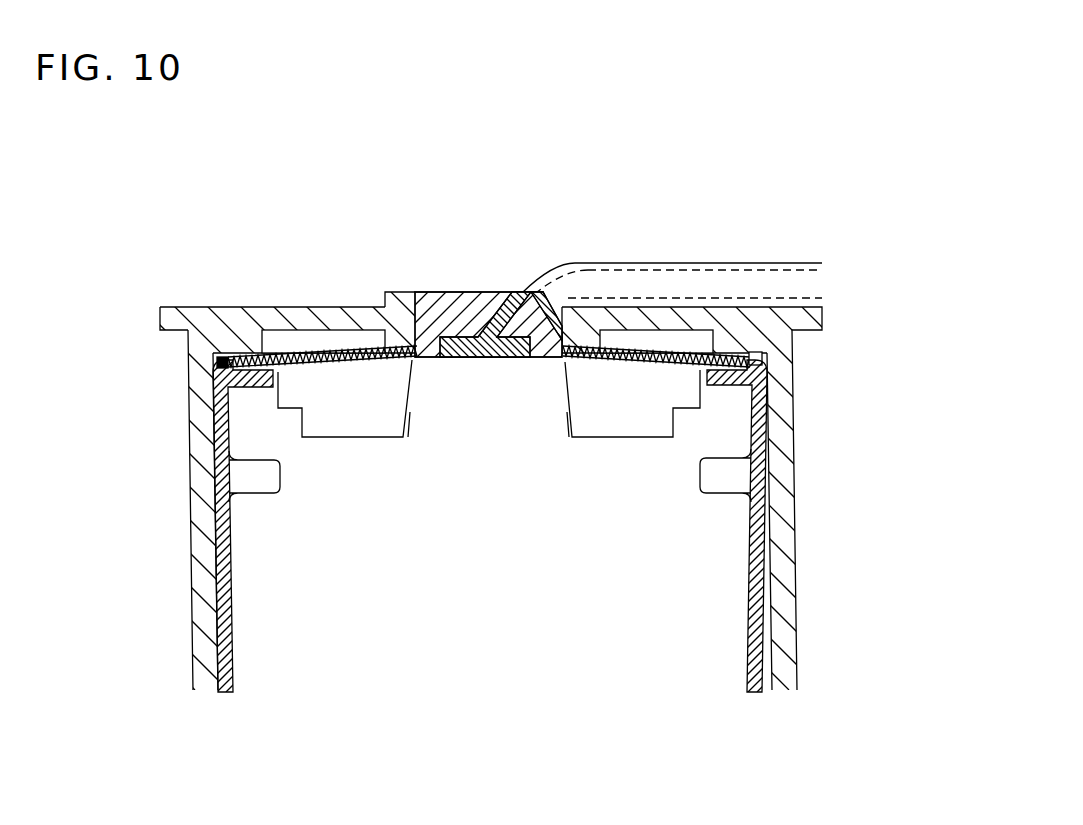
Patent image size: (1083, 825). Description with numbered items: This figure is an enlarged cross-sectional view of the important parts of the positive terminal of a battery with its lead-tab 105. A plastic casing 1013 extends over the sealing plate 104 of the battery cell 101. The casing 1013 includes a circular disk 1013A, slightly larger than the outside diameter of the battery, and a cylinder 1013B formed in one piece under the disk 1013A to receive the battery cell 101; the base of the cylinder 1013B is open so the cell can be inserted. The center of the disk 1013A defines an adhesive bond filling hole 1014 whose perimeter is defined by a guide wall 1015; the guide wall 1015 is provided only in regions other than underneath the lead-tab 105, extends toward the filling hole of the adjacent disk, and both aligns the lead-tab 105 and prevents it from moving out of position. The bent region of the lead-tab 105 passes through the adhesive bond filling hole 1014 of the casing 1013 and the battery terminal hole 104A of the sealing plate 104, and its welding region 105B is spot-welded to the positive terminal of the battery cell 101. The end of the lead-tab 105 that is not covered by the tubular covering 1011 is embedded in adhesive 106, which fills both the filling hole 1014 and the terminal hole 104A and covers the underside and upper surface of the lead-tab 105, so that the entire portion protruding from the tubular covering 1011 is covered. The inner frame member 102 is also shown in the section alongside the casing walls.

The battery cell 101 is at (477, 665).
The inner frame member 102 is at (227, 574).
The sealing plate 104 is at (307, 373).
The battery terminal hole 104A is at (432, 362).
The lead-tab 105 is at (732, 286).
The welding region 105B is at (488, 327).
The adhesive 106 is at (433, 292).
The tubular covering 1011 is at (632, 262).
The casing 1013 is at (217, 316).
The disk 1013A is at (310, 313).
The cylinder 1013B is at (205, 596).
The adhesive bond filling hole 1014 is at (523, 291).
The guide wall 1015 is at (395, 290).